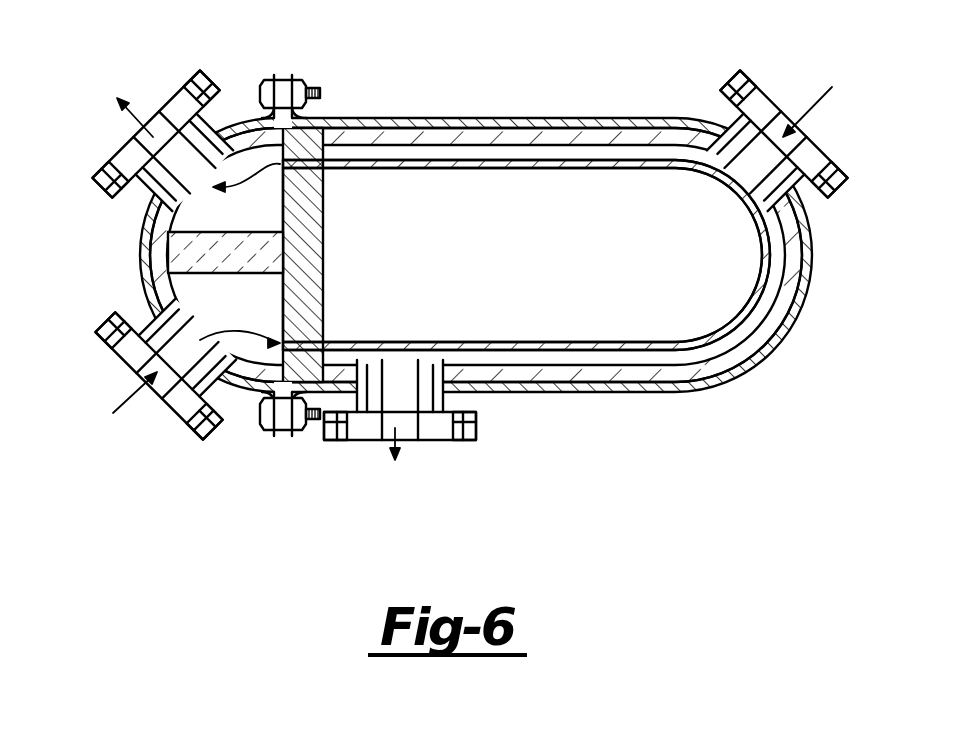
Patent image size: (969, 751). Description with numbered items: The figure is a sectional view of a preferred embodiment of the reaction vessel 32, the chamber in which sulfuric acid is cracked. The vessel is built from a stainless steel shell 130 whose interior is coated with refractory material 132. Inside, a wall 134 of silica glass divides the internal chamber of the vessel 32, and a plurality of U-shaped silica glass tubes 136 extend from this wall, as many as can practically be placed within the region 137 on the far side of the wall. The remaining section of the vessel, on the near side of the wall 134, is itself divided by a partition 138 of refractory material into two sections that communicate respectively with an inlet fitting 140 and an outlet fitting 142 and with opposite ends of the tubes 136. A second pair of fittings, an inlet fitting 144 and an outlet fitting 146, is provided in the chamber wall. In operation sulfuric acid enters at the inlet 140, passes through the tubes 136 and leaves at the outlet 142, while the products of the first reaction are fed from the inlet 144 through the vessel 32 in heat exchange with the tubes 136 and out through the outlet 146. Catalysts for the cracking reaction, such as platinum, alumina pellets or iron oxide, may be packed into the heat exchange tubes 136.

The reaction vessel 32 is at (440, 279).
The stainless steel shell 130 is at (598, 118).
The refractory material 132 is at (750, 342).
The wall 134 is at (318, 215).
The U-shaped silica glass tubes 136 is at (518, 173).
The region 137 is at (630, 328).
The partition 138 is at (211, 266).
The inlet fitting 140 is at (200, 443).
The outlet fitting 142 is at (212, 88).
The inlet fitting 144 is at (730, 82).
The outlet fitting 146 is at (480, 438).